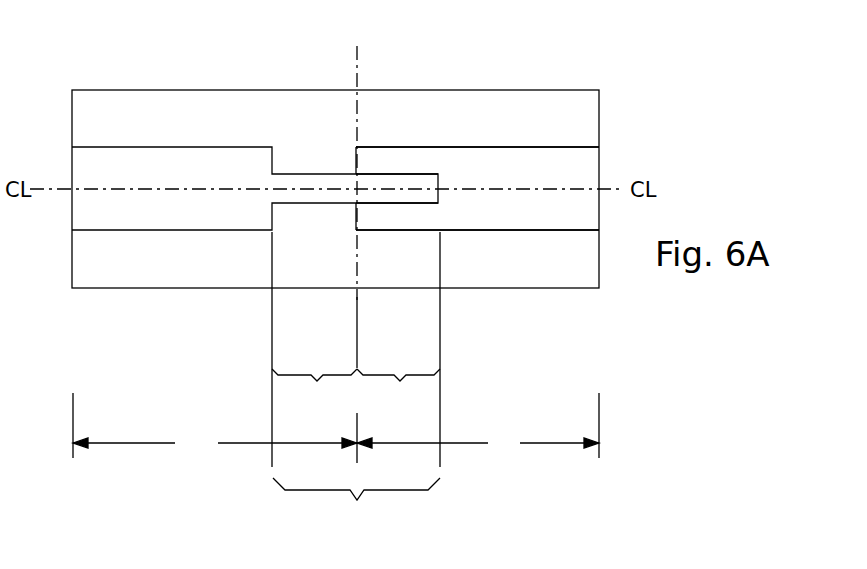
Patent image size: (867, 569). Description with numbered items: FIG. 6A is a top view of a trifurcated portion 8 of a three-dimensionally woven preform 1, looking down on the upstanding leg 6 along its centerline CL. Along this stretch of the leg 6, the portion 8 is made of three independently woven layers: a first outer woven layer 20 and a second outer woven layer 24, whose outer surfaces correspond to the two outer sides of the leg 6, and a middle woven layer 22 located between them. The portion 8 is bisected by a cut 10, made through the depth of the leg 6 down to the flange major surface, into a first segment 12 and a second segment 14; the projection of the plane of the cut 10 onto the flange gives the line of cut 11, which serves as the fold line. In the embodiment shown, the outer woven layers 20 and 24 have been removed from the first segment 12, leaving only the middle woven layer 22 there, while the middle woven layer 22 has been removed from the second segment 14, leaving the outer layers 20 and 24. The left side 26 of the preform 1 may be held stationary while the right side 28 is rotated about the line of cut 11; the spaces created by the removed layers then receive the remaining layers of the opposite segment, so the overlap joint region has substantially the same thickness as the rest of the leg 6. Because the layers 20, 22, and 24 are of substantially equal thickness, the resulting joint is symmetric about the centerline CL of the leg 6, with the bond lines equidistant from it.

The 3D woven T-cross-section preform 1 is at (129, 58).
The upstanding leg 6 is at (570, 167).
The trifurcated portion 8 is at (356, 505).
The cut 10 is at (360, 141).
The line of cut 11 is at (356, 46).
The first segment 12 is at (314, 389).
The second segment 14 is at (398, 389).
The first outer woven layer 20 is at (407, 163).
The middle woven layer 22 is at (287, 197).
The second outer woven layer 24 is at (408, 222).
The left side 26 is at (215, 444).
The right side 28 is at (478, 444).